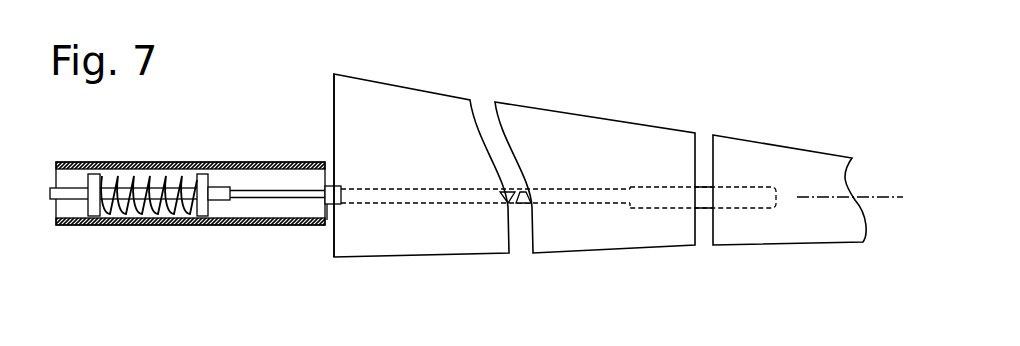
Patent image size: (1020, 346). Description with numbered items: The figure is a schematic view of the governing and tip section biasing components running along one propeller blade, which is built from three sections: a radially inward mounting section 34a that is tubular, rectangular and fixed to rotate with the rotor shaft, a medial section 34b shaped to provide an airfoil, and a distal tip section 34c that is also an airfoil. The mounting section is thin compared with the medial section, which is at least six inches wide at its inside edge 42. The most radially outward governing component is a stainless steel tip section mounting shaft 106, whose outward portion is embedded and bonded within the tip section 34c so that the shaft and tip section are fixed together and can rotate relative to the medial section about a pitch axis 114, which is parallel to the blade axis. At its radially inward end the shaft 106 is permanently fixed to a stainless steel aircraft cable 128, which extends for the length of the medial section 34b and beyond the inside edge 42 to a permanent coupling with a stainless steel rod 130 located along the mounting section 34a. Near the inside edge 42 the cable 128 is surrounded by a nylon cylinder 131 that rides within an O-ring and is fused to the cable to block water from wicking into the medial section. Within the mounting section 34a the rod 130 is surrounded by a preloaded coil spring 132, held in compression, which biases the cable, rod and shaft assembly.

The mounting section 34a is at (98, 163).
The medial section 34b is at (403, 97).
The tip section 34c is at (737, 153).
The inside edge 42 is at (333, 112).
The tip section mounting shaft 106 is at (707, 187).
The pitch axis 114 is at (832, 197).
The cable 128 is at (245, 187).
The rod 130 is at (222, 202).
The cylinder 131 is at (333, 233).
The coil spring 132 is at (160, 177).